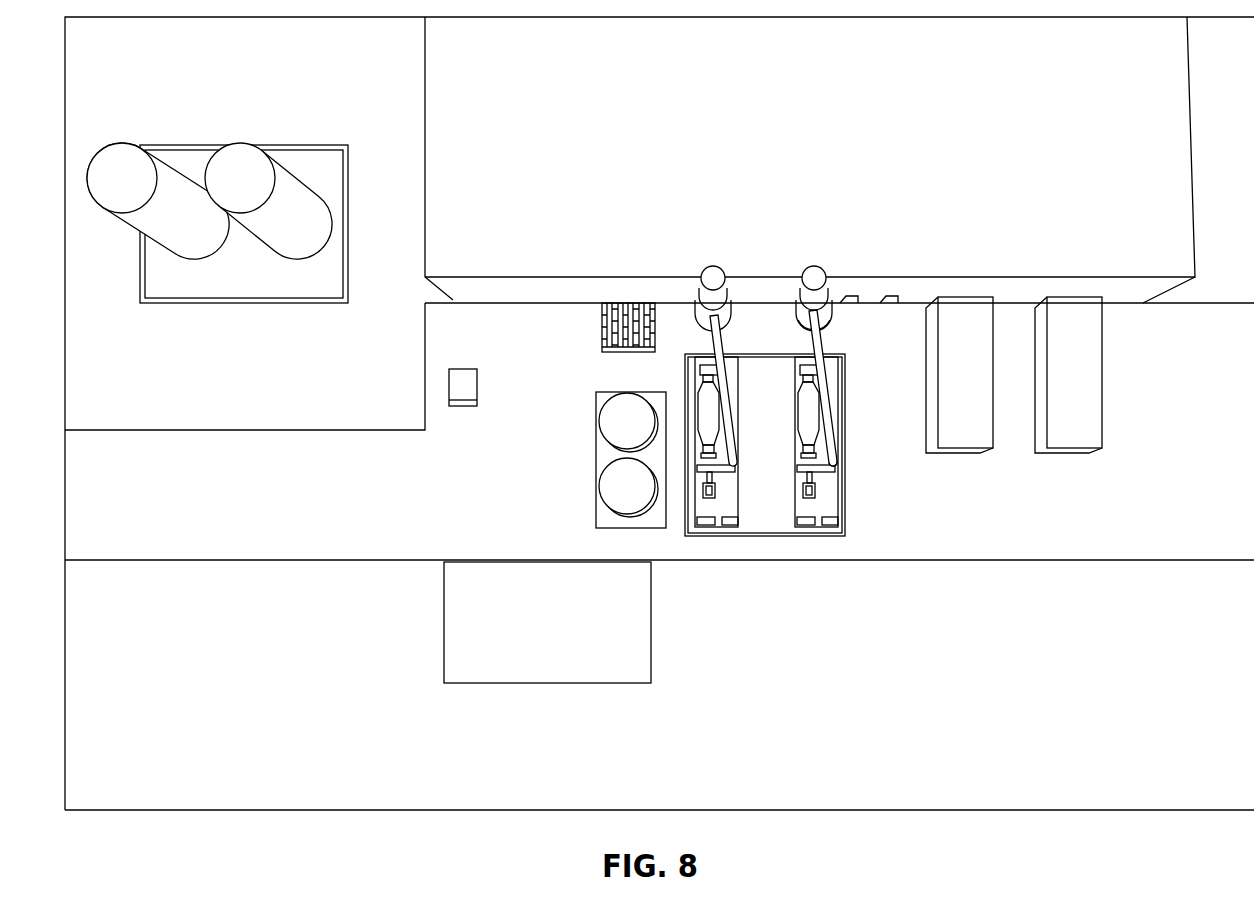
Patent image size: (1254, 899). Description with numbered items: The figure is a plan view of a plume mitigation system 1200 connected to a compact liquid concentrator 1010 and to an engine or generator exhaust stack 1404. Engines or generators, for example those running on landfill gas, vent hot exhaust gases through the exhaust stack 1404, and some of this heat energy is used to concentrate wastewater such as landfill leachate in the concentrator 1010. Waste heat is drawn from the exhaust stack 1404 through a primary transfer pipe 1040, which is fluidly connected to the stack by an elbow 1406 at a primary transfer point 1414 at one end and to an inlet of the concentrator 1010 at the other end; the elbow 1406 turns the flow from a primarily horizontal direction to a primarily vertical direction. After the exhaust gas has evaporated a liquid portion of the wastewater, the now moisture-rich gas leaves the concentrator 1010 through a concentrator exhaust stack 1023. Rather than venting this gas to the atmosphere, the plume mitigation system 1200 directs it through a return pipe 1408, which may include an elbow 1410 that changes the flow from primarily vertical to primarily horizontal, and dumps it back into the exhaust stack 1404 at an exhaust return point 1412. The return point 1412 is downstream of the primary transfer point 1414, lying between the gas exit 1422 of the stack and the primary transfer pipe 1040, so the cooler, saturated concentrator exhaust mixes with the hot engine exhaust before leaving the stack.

The plume mitigation system 1200 is at (803, 401).
The concentrator 1010 is at (808, 411).
The primary transfer pipe 1040 is at (816, 442).
The concentrator exhaust stack 1023 is at (816, 481).
The exhaust stack 1404 is at (814, 298).
The exhaust return point 1412 is at (814, 278).
The gas exit 1422 is at (814, 299).
The primary transfer point 1414 is at (814, 315).
The elbow 1406 is at (814, 325).
The return pipe 1408 is at (823, 388).
The elbow 1410 is at (833, 463).